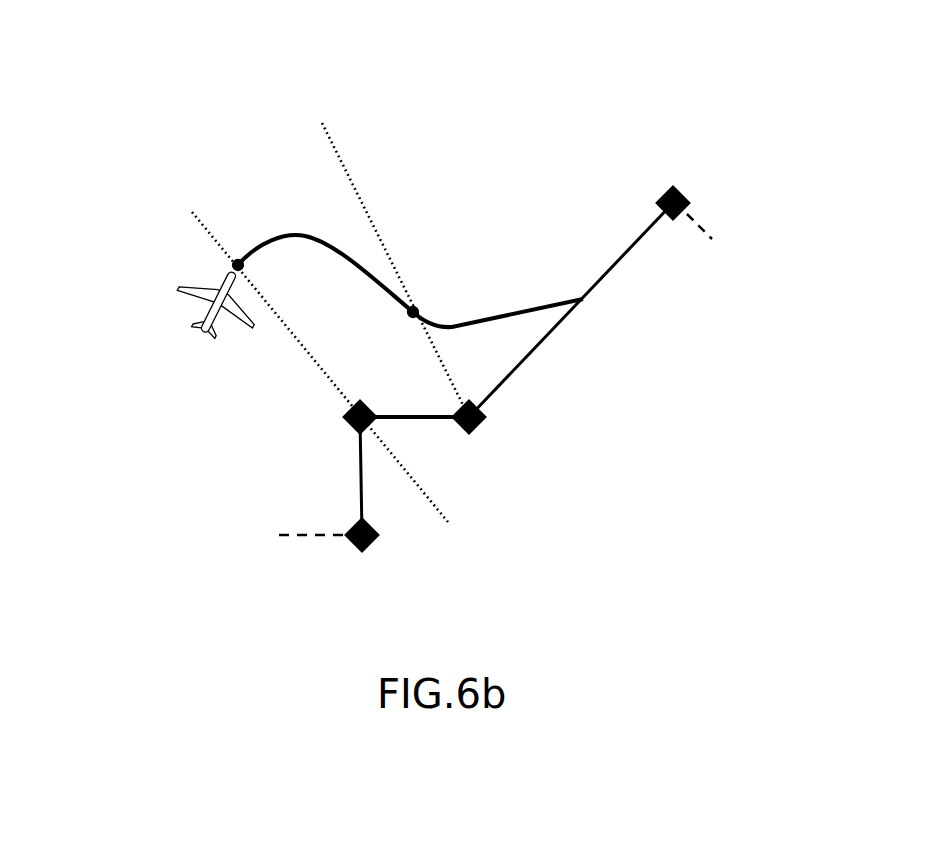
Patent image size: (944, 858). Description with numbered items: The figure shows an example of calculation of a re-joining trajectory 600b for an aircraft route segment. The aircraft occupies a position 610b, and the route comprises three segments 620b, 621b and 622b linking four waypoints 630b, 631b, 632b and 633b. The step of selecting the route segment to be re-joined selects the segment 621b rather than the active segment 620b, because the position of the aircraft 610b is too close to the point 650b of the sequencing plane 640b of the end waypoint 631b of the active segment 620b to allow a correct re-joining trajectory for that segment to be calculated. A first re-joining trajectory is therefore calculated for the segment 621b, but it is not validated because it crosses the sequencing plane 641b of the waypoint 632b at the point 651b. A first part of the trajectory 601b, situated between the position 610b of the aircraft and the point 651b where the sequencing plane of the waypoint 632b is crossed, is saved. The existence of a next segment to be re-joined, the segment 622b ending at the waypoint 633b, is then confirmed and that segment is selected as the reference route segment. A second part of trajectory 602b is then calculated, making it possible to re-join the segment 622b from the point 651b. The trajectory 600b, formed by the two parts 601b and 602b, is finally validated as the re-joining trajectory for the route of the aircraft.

The re-joining trajectory 600b is at (215, 138).
The first part of the trajectory 601b is at (290, 235).
The second part of trajectory 602b is at (523, 306).
The position of the aircraft 610b is at (185, 288).
The active segment 620b is at (362, 487).
The route segment to be re-joined 621b is at (418, 421).
The next segment to be re-joined 622b is at (552, 338).
The waypoint 630b is at (347, 548).
The end waypoint of the active segment 631b is at (344, 418).
The waypoint 632b is at (482, 425).
The waypoint 633b is at (672, 221).
The sequencing plane 640b is at (197, 222).
The sequencing plane 641b is at (332, 143).
The point of the sequencing plane 650b is at (233, 264).
The point at which the sequencing plane is crossed 651b is at (418, 306).